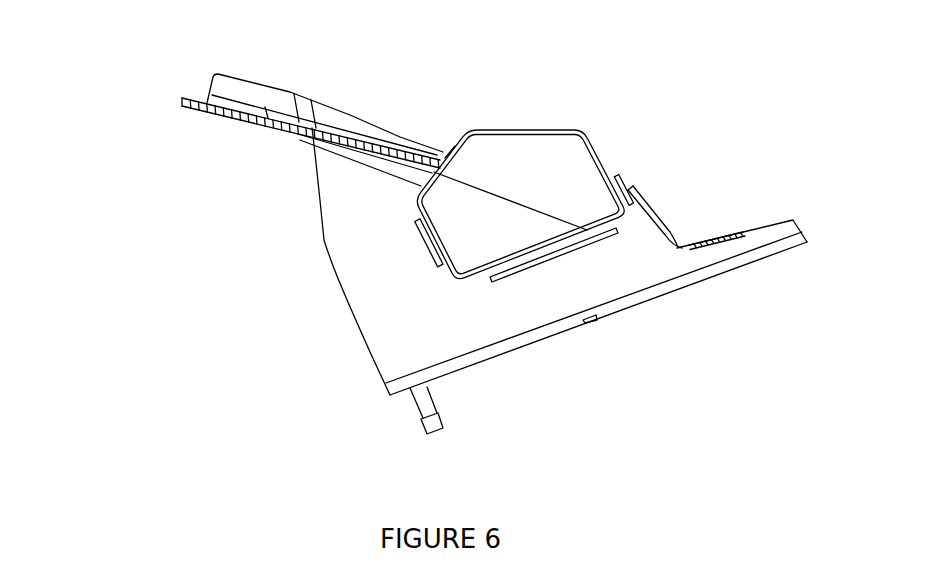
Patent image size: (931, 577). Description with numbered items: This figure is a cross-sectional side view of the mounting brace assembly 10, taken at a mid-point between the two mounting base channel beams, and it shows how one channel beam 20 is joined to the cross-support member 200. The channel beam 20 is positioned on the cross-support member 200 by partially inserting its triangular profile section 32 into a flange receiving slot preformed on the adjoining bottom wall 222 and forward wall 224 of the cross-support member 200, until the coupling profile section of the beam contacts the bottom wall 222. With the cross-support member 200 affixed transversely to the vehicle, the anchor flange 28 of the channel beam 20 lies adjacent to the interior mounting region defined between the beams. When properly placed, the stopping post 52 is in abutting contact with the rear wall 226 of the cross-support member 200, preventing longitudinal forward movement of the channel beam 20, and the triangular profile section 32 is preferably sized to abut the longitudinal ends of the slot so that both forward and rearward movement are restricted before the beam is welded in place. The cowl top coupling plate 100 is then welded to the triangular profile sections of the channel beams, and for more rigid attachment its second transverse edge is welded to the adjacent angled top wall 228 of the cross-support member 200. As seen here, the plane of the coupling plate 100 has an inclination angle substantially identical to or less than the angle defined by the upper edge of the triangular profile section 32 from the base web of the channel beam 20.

The vehicle seat assembly 10 is at (207, 194).
The channel beam 20 is at (722, 273).
The anchor flange 28 is at (350, 305).
The triangular profile section 32 is at (475, 230).
The stopping post 52 is at (633, 205).
The cowl top coupling plate 100 is at (235, 97).
The cross-support member 200 is at (523, 153).
The bottom wall 222 is at (547, 257).
The forward wall 224 is at (407, 203).
The rear wall 226 is at (608, 162).
The angled top wall 228 is at (450, 150).